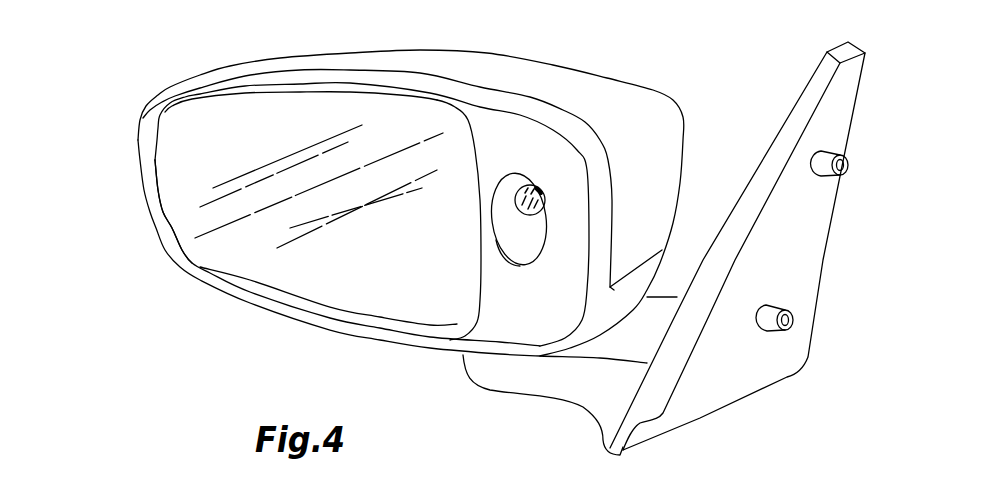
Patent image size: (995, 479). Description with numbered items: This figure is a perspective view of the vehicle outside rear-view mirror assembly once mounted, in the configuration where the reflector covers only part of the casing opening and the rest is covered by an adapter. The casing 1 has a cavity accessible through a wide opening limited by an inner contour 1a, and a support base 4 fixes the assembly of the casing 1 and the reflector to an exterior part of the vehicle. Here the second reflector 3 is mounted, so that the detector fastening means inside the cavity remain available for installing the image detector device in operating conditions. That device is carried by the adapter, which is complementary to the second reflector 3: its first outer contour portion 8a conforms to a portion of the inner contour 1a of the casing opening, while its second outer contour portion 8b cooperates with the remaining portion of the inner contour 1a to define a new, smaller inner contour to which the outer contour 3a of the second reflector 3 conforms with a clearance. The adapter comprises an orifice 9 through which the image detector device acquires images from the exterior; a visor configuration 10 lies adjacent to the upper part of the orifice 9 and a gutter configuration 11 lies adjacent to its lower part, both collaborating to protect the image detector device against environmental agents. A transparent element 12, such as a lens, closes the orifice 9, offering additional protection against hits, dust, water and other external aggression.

The casing 1 is at (375, 46).
The inner contour 1a is at (330, 312).
The second reflector 3 is at (227, 245).
The outer contour 3a is at (167, 203).
The support base 4 is at (807, 98).
The first outer contour portion 8a is at (592, 187).
The second outer contour portion 8b is at (541, 320).
The orifice 9 is at (540, 190).
The visor configuration 10 is at (512, 177).
The gutter configuration 11 is at (503, 244).
The transparent element 12 is at (540, 207).